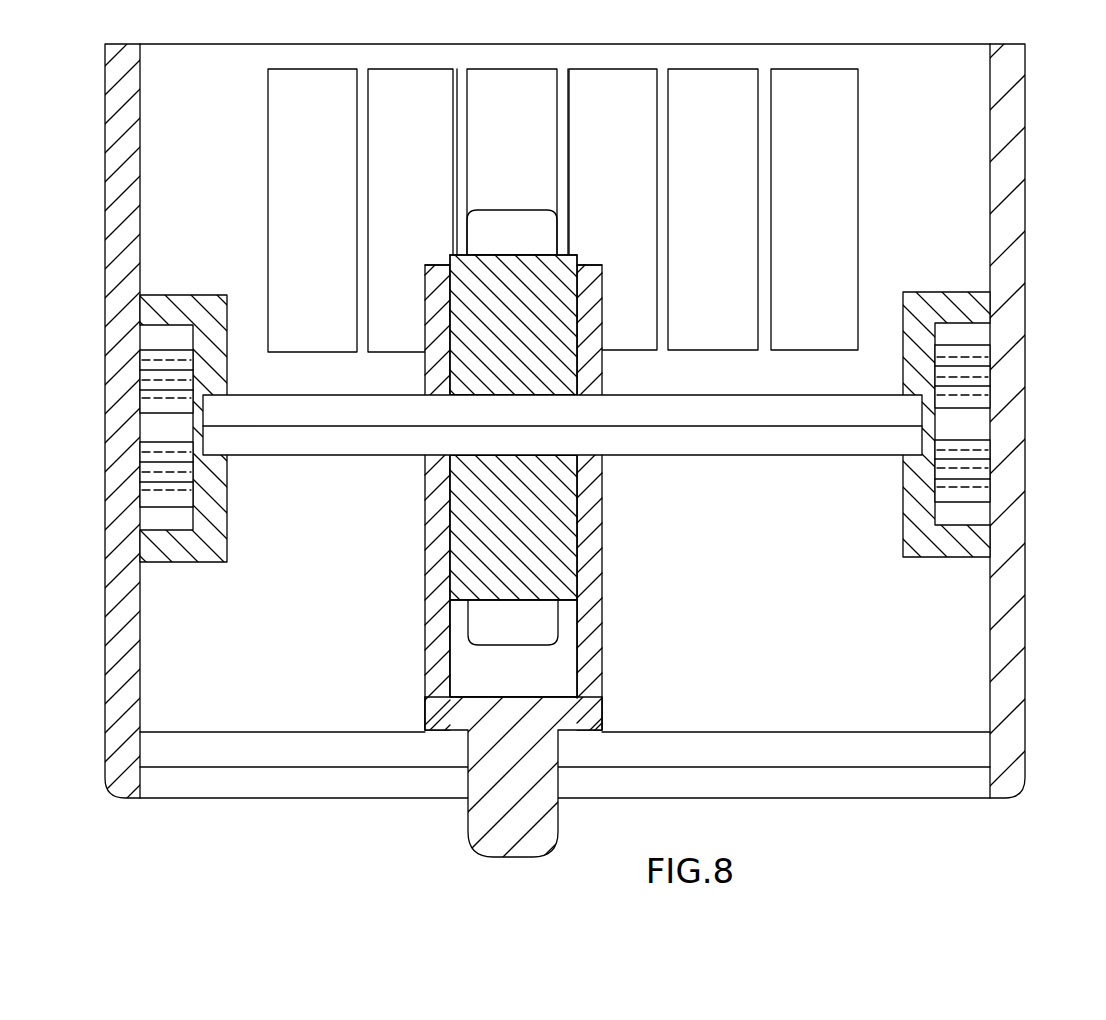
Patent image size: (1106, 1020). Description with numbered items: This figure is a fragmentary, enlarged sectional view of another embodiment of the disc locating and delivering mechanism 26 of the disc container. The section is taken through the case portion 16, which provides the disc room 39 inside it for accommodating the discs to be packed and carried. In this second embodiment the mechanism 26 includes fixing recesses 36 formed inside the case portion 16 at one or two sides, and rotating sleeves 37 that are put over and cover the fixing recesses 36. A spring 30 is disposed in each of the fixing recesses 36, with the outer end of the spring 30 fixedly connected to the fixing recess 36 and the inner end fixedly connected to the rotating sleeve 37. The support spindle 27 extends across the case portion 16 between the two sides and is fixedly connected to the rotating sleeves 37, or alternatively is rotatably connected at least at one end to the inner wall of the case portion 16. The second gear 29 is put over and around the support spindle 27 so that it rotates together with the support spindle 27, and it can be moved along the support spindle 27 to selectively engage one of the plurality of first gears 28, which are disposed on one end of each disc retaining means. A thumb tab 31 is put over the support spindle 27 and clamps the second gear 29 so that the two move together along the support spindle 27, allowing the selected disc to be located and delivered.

The case portion 16 is at (112, 590).
The disc locating and delivering mechanism 26 is at (903, 182).
The support spindle 27 is at (314, 447).
The first gears 28 is at (300, 141).
The second gear 29 is at (505, 222).
The spring 30 is at (185, 497).
The thumb tab 31 is at (595, 575).
The fixing recesses 36 is at (180, 350).
The rotating sleeves 37 is at (195, 553).
The disc room 39 is at (312, 581).